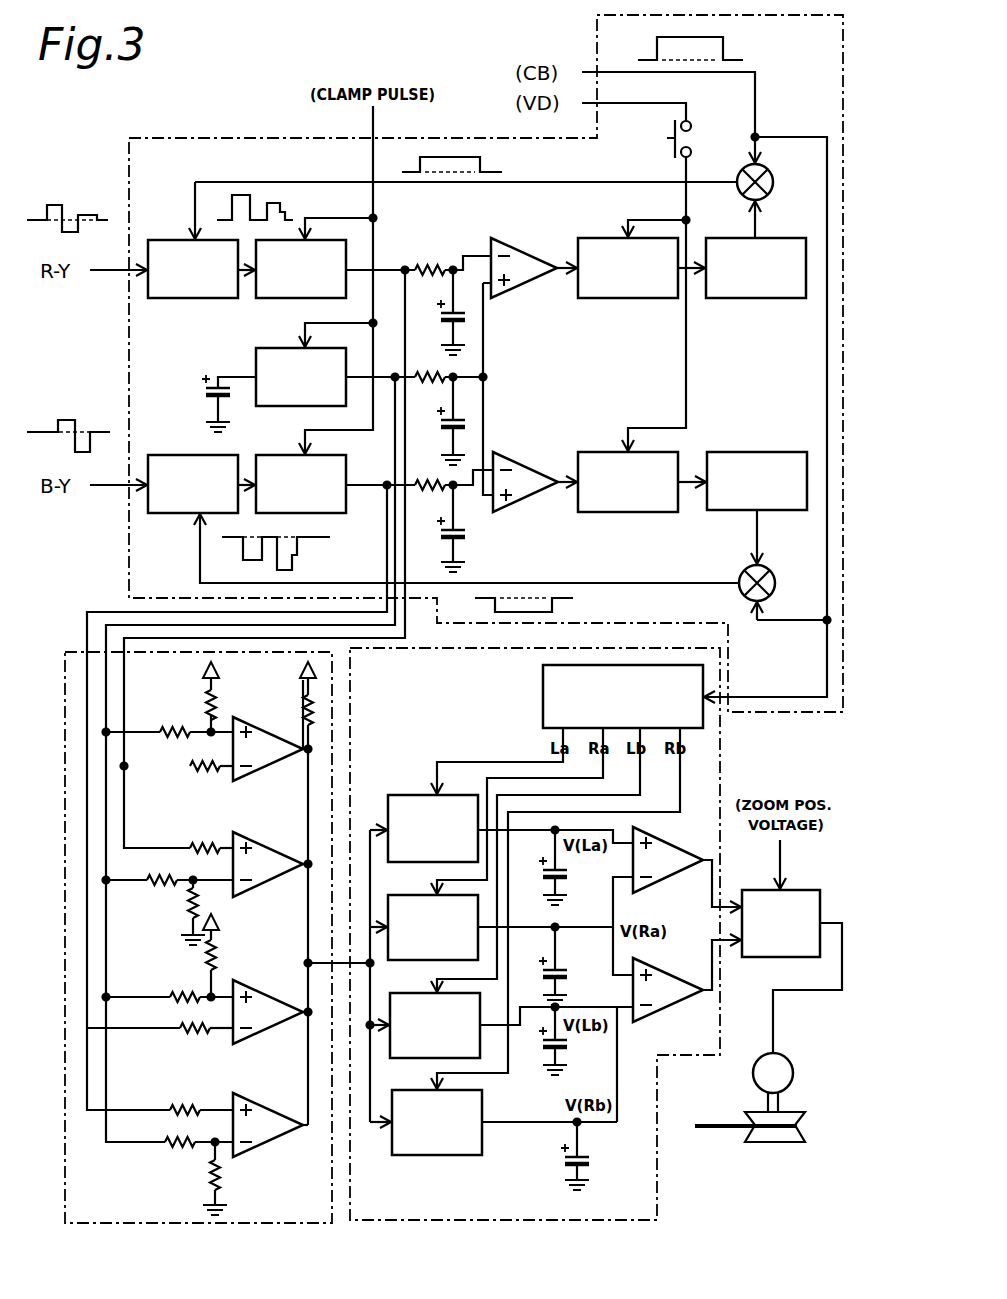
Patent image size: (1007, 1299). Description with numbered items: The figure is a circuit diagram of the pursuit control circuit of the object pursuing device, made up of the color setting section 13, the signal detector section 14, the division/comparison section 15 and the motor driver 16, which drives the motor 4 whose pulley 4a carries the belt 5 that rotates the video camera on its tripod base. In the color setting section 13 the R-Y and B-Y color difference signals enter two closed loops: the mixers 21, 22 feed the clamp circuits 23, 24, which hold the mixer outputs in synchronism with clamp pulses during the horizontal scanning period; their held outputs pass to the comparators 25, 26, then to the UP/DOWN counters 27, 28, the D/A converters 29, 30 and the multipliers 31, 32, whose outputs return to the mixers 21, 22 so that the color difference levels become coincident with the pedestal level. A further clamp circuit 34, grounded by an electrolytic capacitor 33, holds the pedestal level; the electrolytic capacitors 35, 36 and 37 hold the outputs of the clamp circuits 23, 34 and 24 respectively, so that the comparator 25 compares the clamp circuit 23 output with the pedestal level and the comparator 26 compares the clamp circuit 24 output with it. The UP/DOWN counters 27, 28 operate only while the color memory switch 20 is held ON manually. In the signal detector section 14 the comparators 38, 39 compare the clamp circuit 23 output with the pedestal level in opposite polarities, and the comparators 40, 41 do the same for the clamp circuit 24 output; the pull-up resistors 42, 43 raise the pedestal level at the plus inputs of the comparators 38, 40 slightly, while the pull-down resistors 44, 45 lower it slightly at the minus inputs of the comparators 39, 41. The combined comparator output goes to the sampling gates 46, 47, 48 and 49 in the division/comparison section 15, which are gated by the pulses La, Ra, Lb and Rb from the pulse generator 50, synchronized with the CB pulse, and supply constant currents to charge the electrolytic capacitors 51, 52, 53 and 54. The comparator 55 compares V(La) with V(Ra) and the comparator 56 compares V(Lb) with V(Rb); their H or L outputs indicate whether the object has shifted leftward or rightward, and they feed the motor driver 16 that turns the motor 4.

The motor 4 is at (793, 1058).
The pulley 4a is at (806, 1121).
The belt 5 is at (713, 1130).
The color setting section 13 is at (129, 174).
The signal detector section 14 is at (64, 670).
The division/comparison section 15 is at (720, 740).
The motor driver 16 is at (757, 890).
The color memory switch 20 is at (665, 139).
The mixer 21 is at (200, 298).
The mixer 22 is at (183, 455).
The clamp circuit 23 is at (290, 298).
The clamp circuit 24 is at (338, 513).
The comparator 25 is at (522, 247).
The comparator 26 is at (535, 468).
The UP/DOWN counter 27 is at (630, 298).
The UP/DOWN counter 28 is at (604, 452).
The D/A converter 29 is at (745, 298).
The D/A converter 30 is at (754, 452).
The multiplier 31 is at (774, 186).
The multiplier 32 is at (740, 572).
The electrolytic capacitor 33 is at (212, 392).
The clamp circuit 34 is at (290, 406).
The electrolytic capacitor 35 is at (467, 320).
The electrolytic capacitor 36 is at (470, 421).
The electrolytic capacitor 37 is at (470, 533).
The comparator 38 is at (262, 738).
The comparator 39 is at (262, 850).
The comparator 40 is at (278, 972).
The comparator 41 is at (268, 1143).
The pull-up resistor 42 is at (205, 703).
The pull-up resistor 43 is at (205, 968).
The pull-down resistor 44 is at (188, 912).
The pull-down resistor 45 is at (210, 1180).
The sampling gate 46 is at (412, 794).
The sampling gate 47 is at (422, 894).
The sampling gate 48 is at (425, 992).
The sampling gate 49 is at (411, 1156).
The pulse generator 50 is at (543, 710).
The electrolytic capacitor 51 is at (542, 870).
The electrolytic capacitor 52 is at (542, 970).
The electrolytic capacitor 53 is at (542, 1048).
The electrolytic capacitor 54 is at (564, 1159).
The comparator 55 is at (690, 858).
The comparator 56 is at (692, 969).